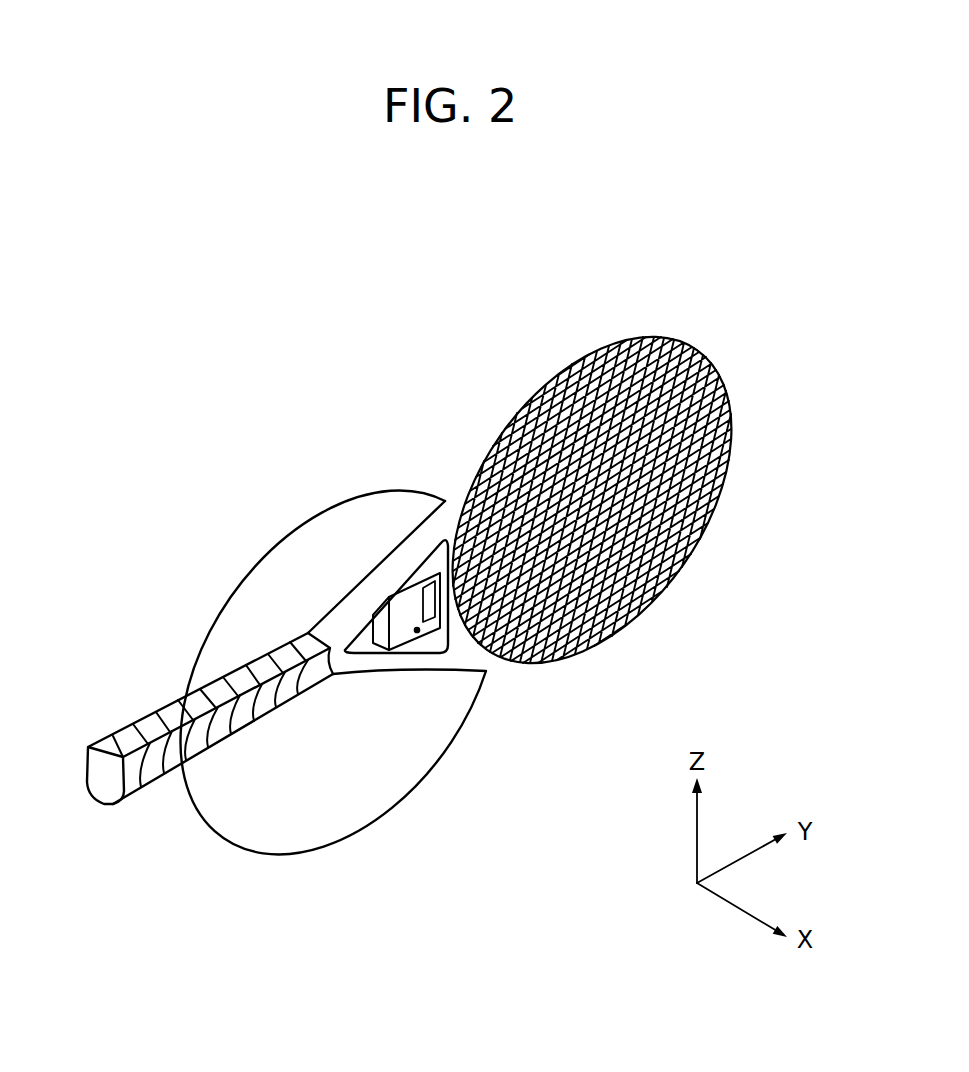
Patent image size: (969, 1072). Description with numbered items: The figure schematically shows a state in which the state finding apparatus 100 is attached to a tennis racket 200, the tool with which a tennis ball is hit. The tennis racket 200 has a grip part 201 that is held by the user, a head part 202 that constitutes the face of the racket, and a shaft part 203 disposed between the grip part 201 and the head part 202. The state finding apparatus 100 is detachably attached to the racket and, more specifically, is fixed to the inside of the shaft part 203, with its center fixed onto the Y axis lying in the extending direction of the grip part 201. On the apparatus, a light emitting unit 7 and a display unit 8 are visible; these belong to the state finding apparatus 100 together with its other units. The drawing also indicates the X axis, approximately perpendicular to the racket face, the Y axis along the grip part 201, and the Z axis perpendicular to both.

The tennis racket 200 is at (545, 338).
The grip part 201 is at (173, 712).
The head part 202 is at (686, 326).
The shaft part 203 is at (388, 568).
The state finding apparatus 100 is at (420, 644).
The light emitting unit 7 is at (421, 636).
The display unit 8 is at (438, 627).